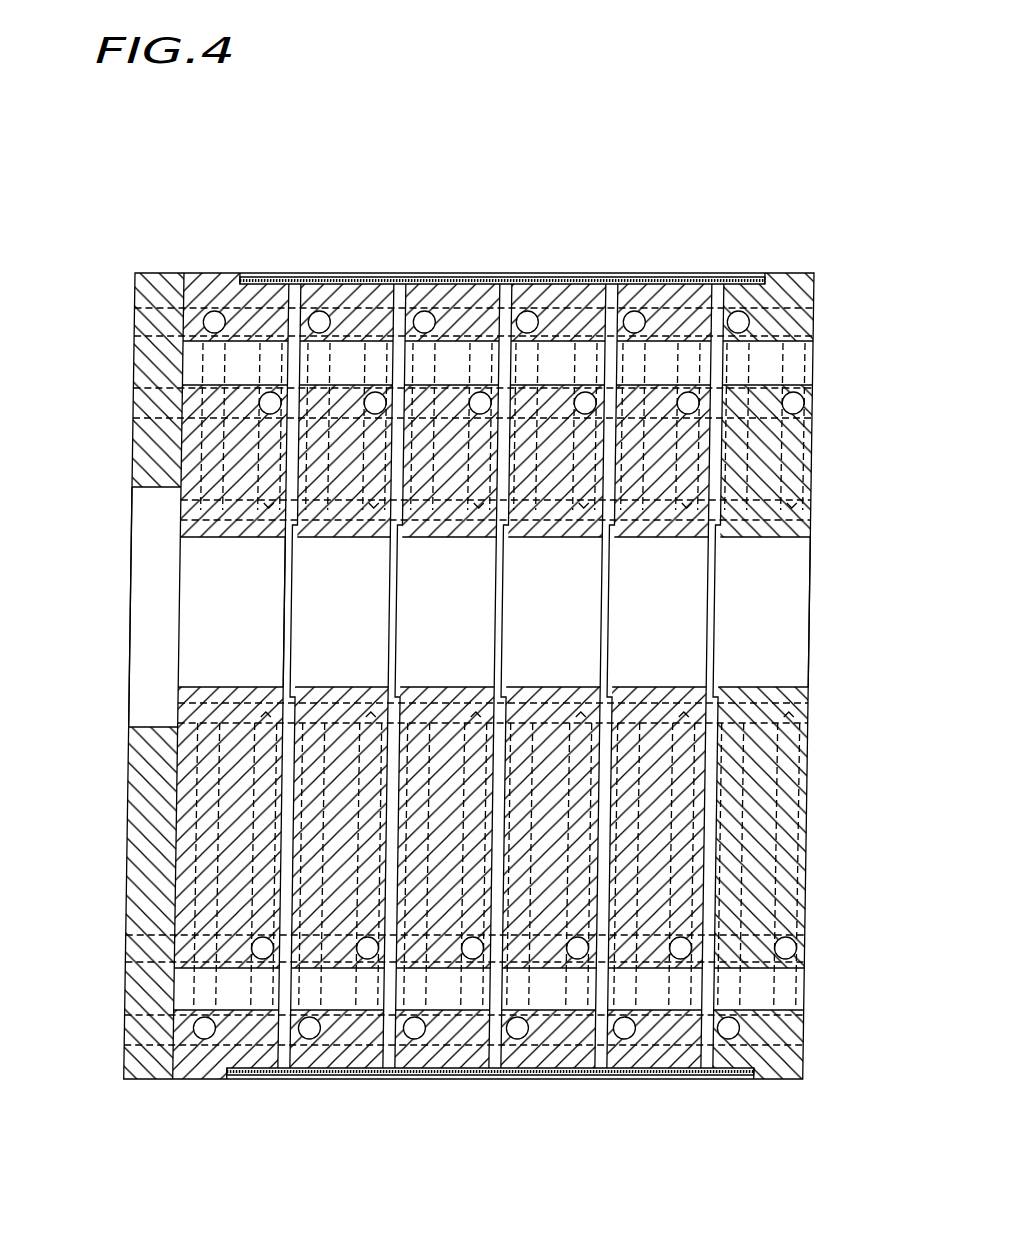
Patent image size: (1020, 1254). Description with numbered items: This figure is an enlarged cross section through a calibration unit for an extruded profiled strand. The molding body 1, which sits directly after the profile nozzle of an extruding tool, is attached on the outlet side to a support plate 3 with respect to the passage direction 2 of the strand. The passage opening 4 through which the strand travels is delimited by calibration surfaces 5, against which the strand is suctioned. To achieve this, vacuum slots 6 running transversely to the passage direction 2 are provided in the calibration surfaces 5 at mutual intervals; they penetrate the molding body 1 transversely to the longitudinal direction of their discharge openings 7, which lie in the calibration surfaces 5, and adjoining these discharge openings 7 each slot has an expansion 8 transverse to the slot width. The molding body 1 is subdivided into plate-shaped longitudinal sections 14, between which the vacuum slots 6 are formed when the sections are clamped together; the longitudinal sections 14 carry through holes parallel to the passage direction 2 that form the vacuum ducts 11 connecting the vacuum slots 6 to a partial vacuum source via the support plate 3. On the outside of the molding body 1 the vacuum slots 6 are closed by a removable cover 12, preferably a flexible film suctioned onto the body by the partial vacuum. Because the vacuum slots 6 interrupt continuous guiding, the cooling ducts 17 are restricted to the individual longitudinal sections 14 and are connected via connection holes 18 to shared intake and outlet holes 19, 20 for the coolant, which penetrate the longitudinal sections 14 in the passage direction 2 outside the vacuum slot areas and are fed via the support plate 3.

The molding body 1 is at (176, 262).
The passage direction 2 is at (187, 612).
The support plate 3 is at (150, 822).
The passage opening 4 is at (776, 626).
The calibration surfaces 5 is at (347, 686).
The vacuum slots 6 is at (383, 438).
The discharge openings 7 is at (289, 523).
The expansion 8 is at (298, 360).
The vacuum ducts 11 is at (471, 357).
The cover 12 is at (366, 276).
The longitudinal sections 14 is at (322, 284).
The cooling ducts 17 is at (552, 700).
The connection holes 18 is at (690, 393).
The intake hole 19 is at (773, 525).
The outlet hole 20 is at (580, 333).